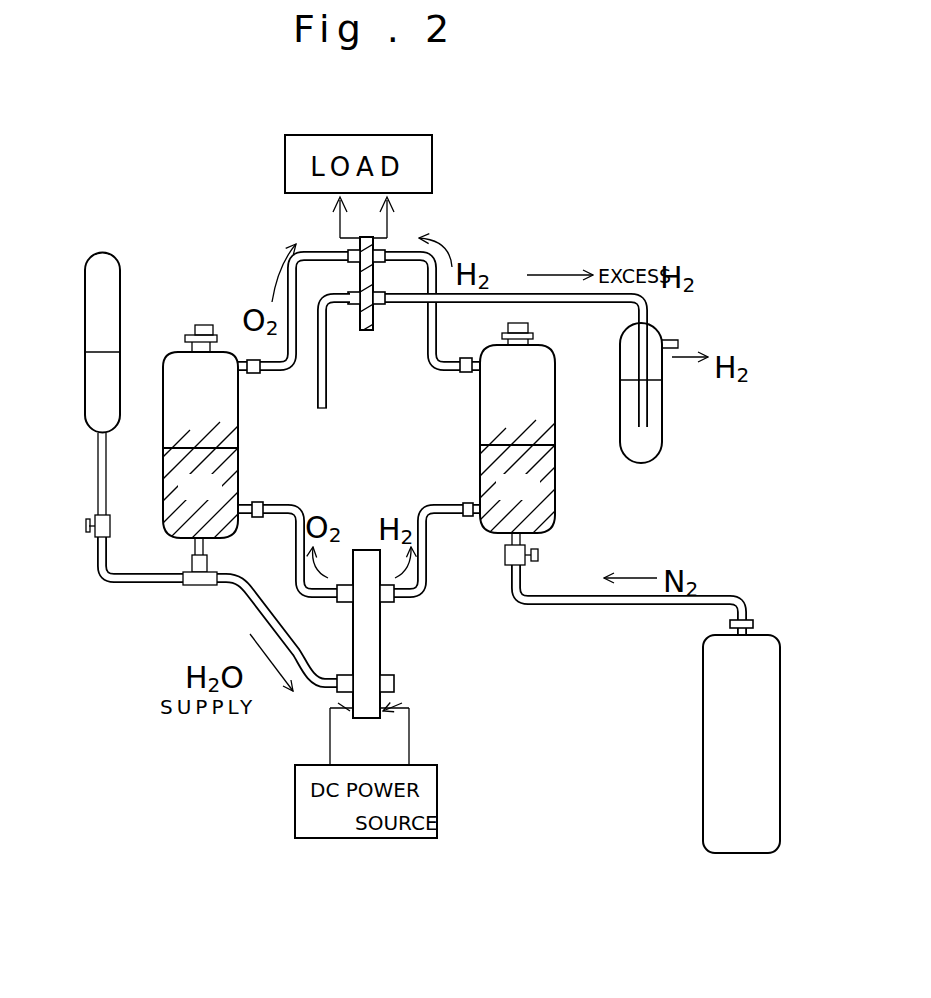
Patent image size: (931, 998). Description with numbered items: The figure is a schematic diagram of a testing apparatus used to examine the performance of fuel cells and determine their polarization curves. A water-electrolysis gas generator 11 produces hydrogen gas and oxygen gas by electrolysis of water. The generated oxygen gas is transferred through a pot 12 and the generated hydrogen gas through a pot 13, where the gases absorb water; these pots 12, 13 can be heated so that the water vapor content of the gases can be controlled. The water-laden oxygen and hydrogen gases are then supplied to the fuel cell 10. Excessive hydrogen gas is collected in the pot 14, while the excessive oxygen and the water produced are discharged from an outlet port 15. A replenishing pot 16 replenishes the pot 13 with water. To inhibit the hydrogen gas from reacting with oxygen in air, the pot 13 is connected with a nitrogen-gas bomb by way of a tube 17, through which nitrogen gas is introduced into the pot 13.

The fuel cell 10 is at (382, 272).
The water-electrolysis gas generator 11 is at (392, 661).
The pot 12 is at (204, 441).
The pot 13 is at (522, 445).
The pot 14 is at (651, 434).
The outlet port 15 is at (341, 345).
The replenishing pot 16 is at (90, 327).
The tube 17 is at (733, 598).